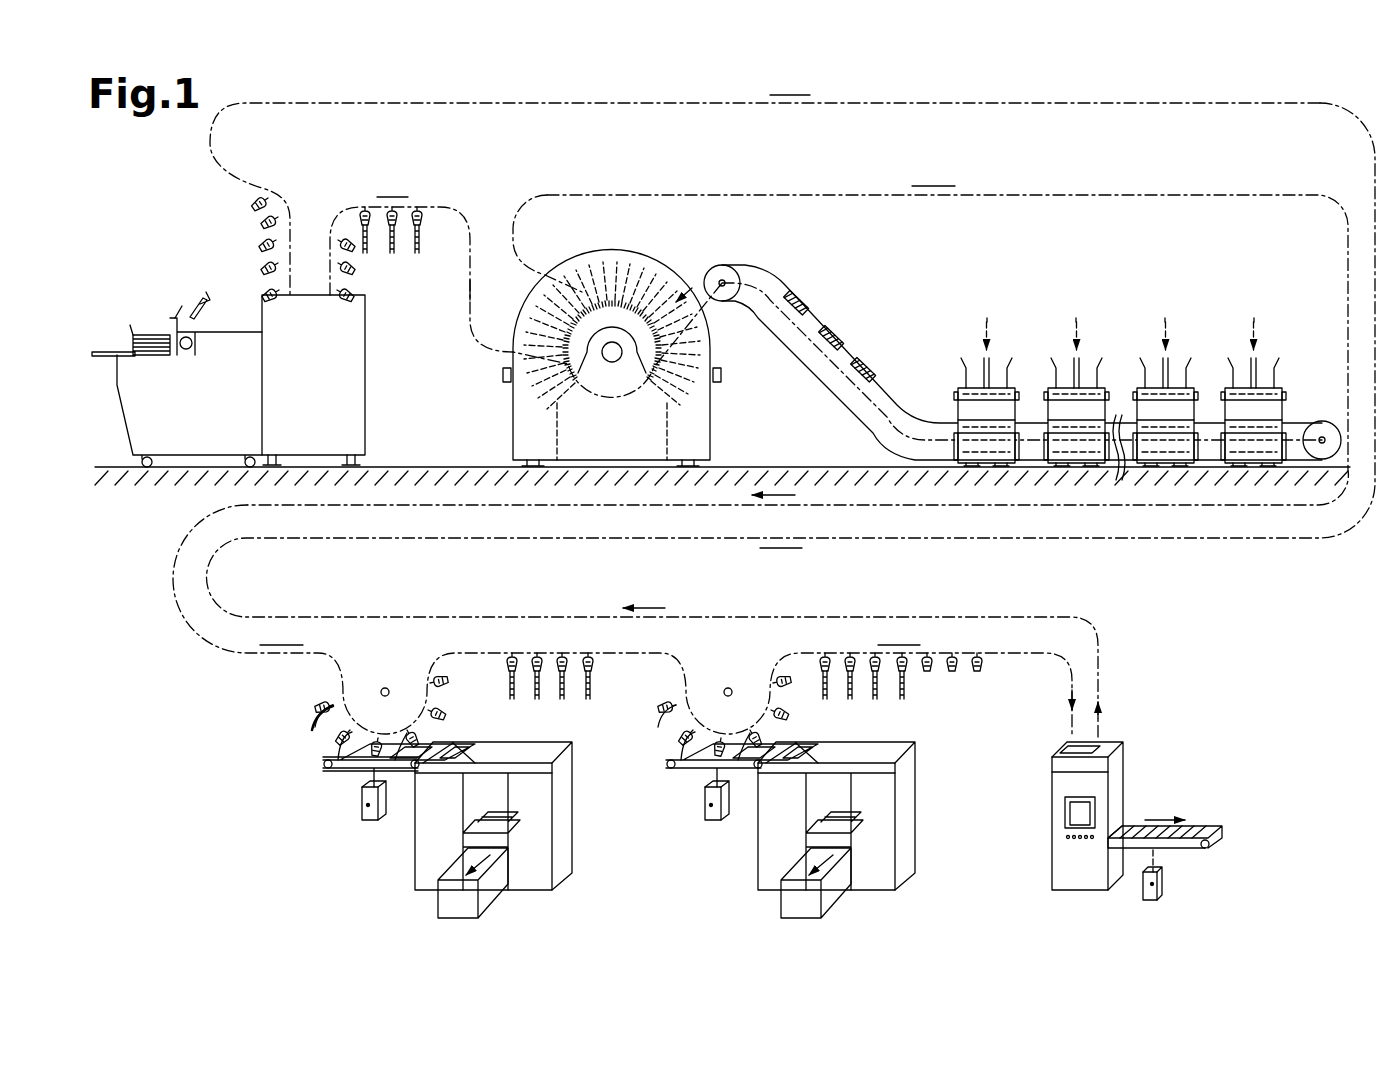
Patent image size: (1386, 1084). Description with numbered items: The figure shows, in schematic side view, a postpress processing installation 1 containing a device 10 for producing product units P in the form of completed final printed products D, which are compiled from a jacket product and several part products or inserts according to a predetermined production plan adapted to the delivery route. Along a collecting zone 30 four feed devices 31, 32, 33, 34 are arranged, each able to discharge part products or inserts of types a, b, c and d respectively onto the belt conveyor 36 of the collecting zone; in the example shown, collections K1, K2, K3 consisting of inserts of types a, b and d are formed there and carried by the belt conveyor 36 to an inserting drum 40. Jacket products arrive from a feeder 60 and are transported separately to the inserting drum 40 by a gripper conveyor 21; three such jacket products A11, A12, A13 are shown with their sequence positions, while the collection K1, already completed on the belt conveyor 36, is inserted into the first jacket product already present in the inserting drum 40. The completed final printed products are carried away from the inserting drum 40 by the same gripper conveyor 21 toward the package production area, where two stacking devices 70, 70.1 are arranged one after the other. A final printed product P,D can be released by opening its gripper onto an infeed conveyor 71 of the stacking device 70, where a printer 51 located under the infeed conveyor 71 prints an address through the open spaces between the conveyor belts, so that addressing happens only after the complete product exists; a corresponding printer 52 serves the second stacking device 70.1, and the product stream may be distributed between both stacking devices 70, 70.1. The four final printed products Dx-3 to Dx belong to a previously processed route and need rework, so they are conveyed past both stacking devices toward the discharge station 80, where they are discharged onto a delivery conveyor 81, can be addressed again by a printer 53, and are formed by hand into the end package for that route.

The postpress processing installation 1 is at (183, 217).
The device for the production of product units 10 is at (893, 163).
The gripper conveyor 21 is at (443, 220).
The collecting zone 30 is at (1082, 247).
The feed device 31 is at (987, 410).
The feed device 32 is at (1076, 410).
The feed device 33 is at (1165, 410).
The feed device 34 is at (1254, 410).
The belt conveyor 36 is at (812, 358).
The inserting drum 40 is at (627, 441).
The printer 51 is at (365, 808).
The printer 52 is at (708, 808).
The printer 53 is at (1158, 885).
The feeder 60 is at (325, 392).
The stacking device 70 is at (583, 852).
The stacking device 70.1 is at (920, 850).
The infeed conveyor 71 is at (340, 772).
The discharge station 80 is at (1160, 790).
The delivery conveyor 81 is at (1214, 832).
The part product or insert of type a is at (988, 310).
The part product or insert of type b is at (1076, 310).
The part product or insert of type c is at (1165, 310).
The part product or insert of type d is at (1254, 310).
The collection K1 is at (810, 303).
The collection K2 is at (842, 338).
The collection K3 is at (871, 371).
The jacket product A11 is at (417, 245).
The jacket product A12 is at (392, 250).
The jacket product A13 is at (367, 245).
The product unit / final printed product P,D is at (313, 728).
The final printed product Dx is at (825, 697).
The final printed product Dx-3 is at (902, 692).